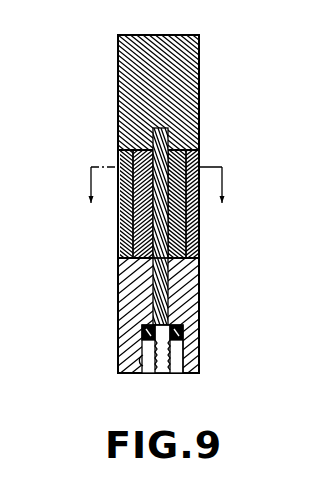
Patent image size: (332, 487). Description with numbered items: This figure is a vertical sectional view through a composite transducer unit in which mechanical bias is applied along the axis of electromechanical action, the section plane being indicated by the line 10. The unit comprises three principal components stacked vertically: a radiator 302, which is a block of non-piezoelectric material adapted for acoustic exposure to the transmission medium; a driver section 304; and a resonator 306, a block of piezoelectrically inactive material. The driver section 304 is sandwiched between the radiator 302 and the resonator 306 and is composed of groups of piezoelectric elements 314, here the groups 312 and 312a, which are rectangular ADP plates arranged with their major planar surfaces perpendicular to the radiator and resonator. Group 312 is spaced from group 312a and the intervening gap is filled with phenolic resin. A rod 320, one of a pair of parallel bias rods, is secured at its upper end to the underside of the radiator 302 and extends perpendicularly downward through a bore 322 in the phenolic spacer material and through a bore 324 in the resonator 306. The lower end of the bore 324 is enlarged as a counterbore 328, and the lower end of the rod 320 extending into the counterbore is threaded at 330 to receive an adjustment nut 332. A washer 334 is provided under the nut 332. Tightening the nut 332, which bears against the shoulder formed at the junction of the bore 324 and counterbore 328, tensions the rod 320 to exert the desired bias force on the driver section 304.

The radiator member 302 is at (201, 110).
The driver section 304 is at (201, 234).
The resonator member 306 is at (201, 286).
The group of piezoelectric elements 312 is at (140, 148).
The group of piezoelectric elements 312a is at (178, 148).
The bore 322 is at (160, 235).
The rod 320 is at (160, 281).
The bore 324 is at (143, 330).
The washer 334 is at (183, 333).
The adjustment nut 332 is at (184, 354).
The threaded portion 330 is at (173, 374).
The counterbore 328 is at (142, 375).
The section line 10 is at (159, 196).
The piezoelectric element 314 is at (320, 242).